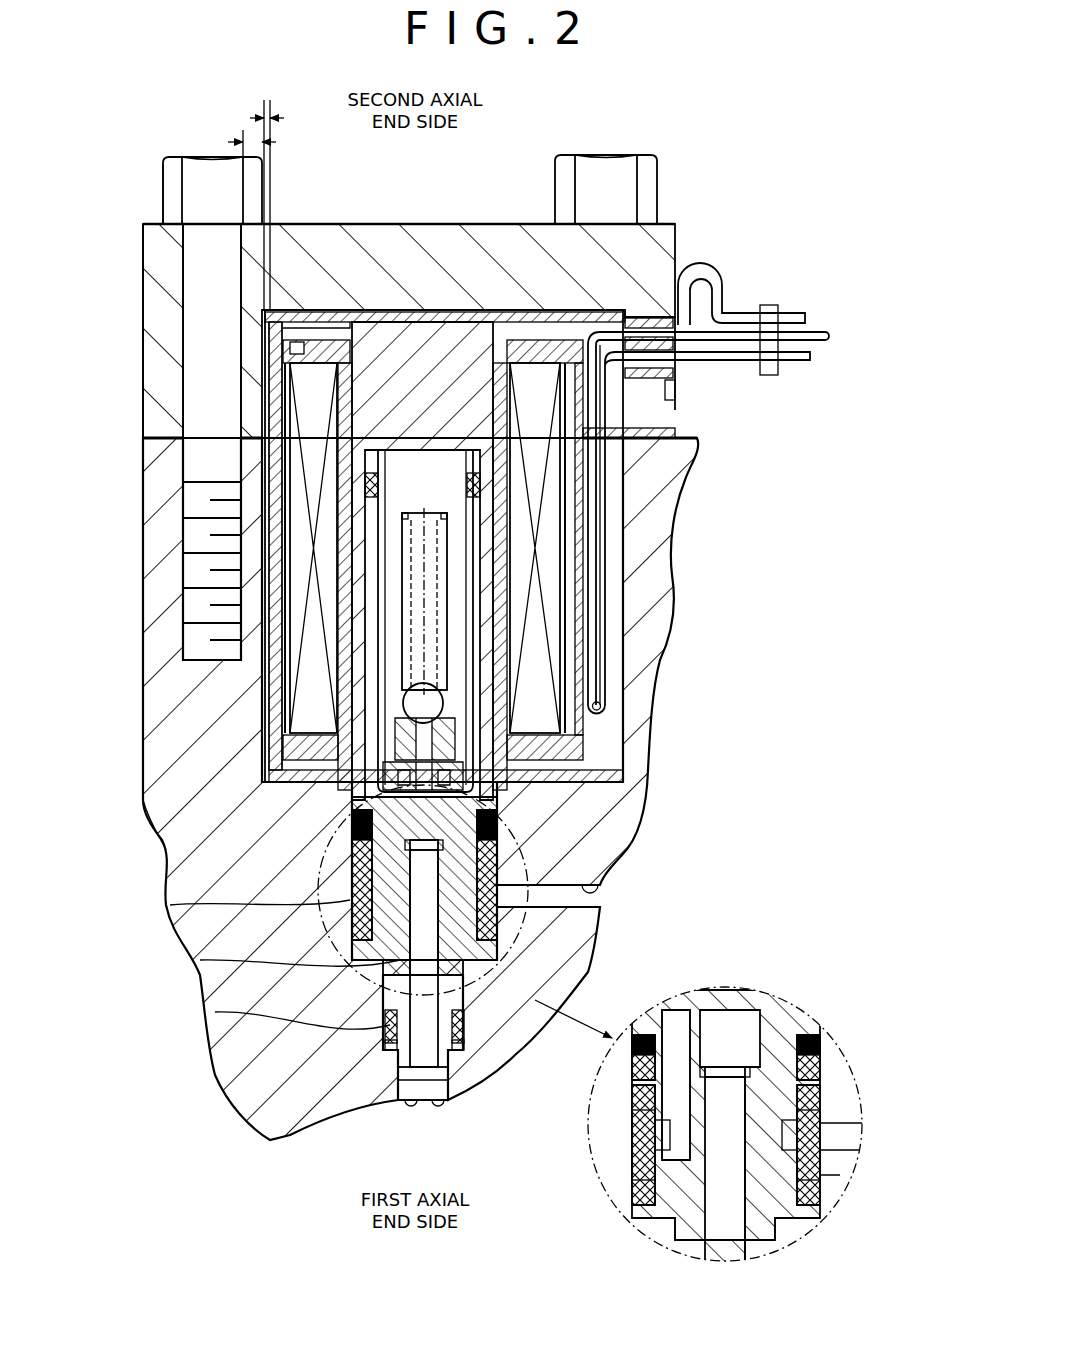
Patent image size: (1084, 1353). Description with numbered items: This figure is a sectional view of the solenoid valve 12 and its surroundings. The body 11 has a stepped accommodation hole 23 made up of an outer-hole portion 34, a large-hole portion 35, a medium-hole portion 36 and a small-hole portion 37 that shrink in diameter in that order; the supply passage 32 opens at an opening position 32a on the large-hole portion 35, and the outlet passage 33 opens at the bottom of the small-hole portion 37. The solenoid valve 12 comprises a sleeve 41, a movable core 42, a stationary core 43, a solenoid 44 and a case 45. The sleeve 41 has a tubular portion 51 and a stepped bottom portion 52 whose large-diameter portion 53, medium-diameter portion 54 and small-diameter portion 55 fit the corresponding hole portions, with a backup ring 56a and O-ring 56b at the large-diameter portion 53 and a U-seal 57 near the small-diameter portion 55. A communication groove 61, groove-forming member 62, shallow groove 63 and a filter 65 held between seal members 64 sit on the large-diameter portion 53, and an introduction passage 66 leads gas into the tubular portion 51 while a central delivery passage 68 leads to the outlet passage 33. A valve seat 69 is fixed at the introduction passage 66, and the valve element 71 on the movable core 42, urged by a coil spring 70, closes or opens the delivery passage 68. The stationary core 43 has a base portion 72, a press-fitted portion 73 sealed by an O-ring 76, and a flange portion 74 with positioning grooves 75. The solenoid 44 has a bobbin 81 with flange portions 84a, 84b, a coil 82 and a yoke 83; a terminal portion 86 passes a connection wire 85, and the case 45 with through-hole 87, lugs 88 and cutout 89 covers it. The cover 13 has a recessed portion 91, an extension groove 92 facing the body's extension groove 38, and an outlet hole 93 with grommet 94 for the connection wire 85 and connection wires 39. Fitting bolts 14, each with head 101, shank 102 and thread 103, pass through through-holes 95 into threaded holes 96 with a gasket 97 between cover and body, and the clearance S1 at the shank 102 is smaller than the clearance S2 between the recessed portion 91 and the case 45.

The body 11 is at (700, 446).
The solenoid valve 12 is at (590, 322).
The cover 13 is at (143, 224).
The fitting bolt 14 is at (168, 157).
The accommodation hole 23 is at (198, 1043).
The supply passage 32 is at (827, 1140).
The opening position 32a is at (823, 1168).
The outlet passage 33 is at (406, 1103).
The outer-hole portion 34 is at (178, 844).
The large-hole portion 35 is at (210, 904).
The medium-hole portion 36 is at (235, 961).
The small-hole portion 37 is at (258, 1012).
The extension groove 38 is at (602, 650).
The connection wires 39 is at (607, 690).
The sleeve 41 is at (350, 686).
The movable core 42 is at (401, 517).
The stationary core 43 is at (356, 312).
The solenoid 44 is at (565, 808).
The case 45 is at (607, 786).
The tubular portion 51 is at (541, 548).
The bottom portion 52 is at (498, 846).
The large-diameter portion 53 is at (497, 930).
The medium-diameter portion 54 is at (438, 998).
The small-diameter portion 55 is at (464, 1022).
The backup ring 56a is at (820, 1040).
The O-ring 56b is at (820, 1062).
The U-seal 57 is at (448, 1080).
The communication groove 61 is at (726, 1126).
The groove-forming member 62 is at (640, 1210).
The shallow groove 63 is at (572, 981).
The seal members 64 is at (637, 1099).
The filter 65 is at (637, 1137).
The introduction passage 66 is at (657, 1060).
The delivery passage 68 is at (437, 1100).
The valve seat 69 is at (355, 820).
The coil spring 70 is at (410, 542).
The valve element 71 is at (358, 735).
The base portion 72 is at (468, 346).
The press-fitted portion 73 is at (277, 467).
The flange portion 74 is at (520, 314).
The positioning grooves 75 is at (313, 548).
The O-ring 76 is at (370, 470).
The bobbin 81 is at (285, 343).
The coil 82 is at (292, 426).
The yoke 83 is at (285, 752).
The flange portion 84a is at (270, 743).
The flange portion 84b is at (285, 357).
The connection wire 85 is at (723, 350).
The terminal portion 86 is at (600, 326).
The through-hole 87 is at (498, 773).
The lugs 88 is at (297, 310).
The cutout 89 is at (562, 385).
The recessed portion 91 is at (406, 310).
The extension groove 92 is at (640, 431).
The outlet hole 93 is at (630, 320).
The grommet 94 is at (672, 398).
The through-holes 95 is at (165, 272).
The threaded holes 96 is at (183, 500).
The gasket 97 is at (143, 438).
The head 101 is at (165, 189).
The shank 102 is at (167, 365).
The thread 103 is at (200, 580).
The clearance S1 is at (240, 138).
The clearance S2 is at (270, 112).